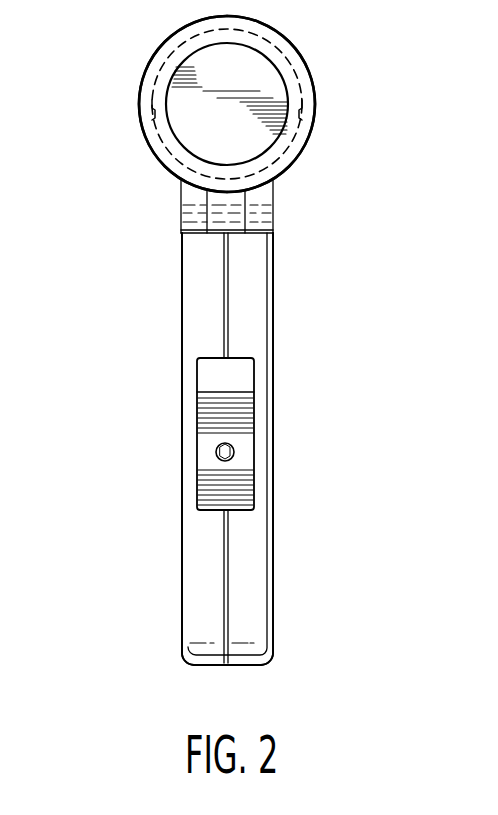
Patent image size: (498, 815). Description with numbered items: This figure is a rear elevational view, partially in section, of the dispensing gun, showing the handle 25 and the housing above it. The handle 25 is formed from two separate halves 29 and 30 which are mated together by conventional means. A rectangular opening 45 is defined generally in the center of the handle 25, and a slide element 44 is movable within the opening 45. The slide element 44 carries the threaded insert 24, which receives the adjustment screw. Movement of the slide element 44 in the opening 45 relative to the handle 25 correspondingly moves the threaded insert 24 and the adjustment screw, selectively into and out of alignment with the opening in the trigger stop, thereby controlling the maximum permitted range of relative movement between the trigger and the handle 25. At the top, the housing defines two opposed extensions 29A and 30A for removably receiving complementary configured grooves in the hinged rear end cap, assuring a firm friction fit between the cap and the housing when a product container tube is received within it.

The handle 25 is at (315, 550).
The handle half 29 is at (181, 642).
The handle half 30 is at (275, 643).
The housing extension 29A is at (140, 121).
The housing extension 30A is at (314, 124).
The rectangular opening 45 is at (230, 380).
The slide element 44 is at (253, 482).
The threaded insert 24 is at (235, 448).